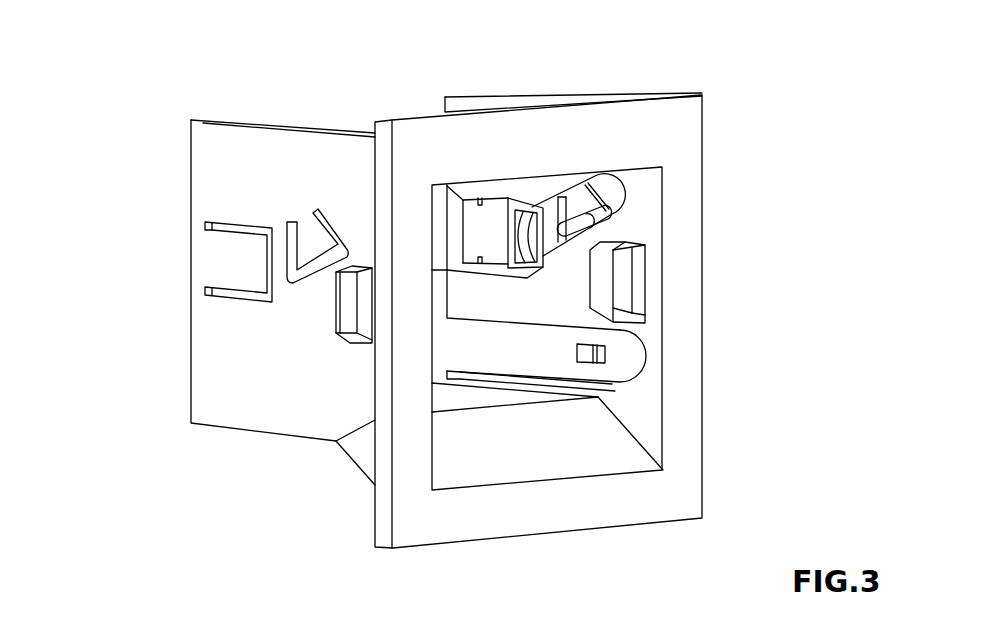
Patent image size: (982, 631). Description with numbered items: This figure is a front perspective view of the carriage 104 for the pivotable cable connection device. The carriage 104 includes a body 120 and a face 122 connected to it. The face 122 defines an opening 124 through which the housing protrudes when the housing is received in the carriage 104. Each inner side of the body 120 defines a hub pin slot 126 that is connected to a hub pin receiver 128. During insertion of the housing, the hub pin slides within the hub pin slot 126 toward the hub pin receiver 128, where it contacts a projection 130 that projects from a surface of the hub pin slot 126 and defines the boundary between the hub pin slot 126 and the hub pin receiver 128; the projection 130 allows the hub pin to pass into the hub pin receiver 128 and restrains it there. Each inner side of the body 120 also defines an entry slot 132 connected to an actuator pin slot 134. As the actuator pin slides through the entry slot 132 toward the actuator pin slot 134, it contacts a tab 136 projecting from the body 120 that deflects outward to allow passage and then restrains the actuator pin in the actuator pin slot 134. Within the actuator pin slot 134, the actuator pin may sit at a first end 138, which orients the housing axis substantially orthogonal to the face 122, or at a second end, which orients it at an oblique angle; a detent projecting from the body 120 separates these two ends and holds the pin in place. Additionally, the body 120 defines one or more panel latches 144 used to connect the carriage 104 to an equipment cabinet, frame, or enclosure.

The carriage 104 is at (152, 44).
The body 120 is at (213, 173).
The face 122 is at (678, 481).
The opening 124 is at (505, 437).
The hub pin slot 126 is at (493, 350).
The hub pin receiver 128 is at (618, 362).
The projection 130 is at (577, 357).
The entry slot 132 is at (460, 233).
The actuator pin slot 134 is at (573, 213).
The tab 136 is at (240, 265).
The first end 138 is at (535, 245).
The panel latches 144 is at (360, 303).